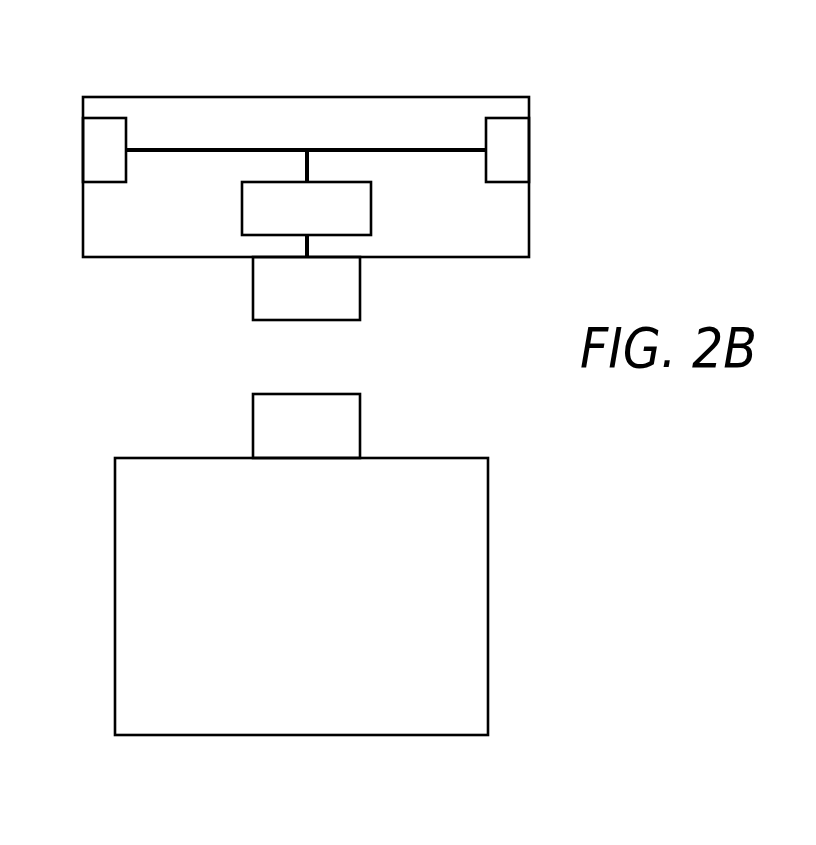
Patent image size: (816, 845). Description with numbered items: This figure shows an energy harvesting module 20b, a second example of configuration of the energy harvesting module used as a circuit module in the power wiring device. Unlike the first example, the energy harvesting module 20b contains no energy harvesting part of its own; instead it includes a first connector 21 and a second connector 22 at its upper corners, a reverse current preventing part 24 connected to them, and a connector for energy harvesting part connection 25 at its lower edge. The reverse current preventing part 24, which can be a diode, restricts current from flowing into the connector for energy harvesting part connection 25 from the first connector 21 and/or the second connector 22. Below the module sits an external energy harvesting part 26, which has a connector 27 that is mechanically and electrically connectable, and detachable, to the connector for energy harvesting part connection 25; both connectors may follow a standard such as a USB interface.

The energy harvesting module 20b is at (391, 94).
The first connector 21 is at (102, 118).
The second connector 22 is at (510, 118).
The reverse current preventing part 24 is at (372, 207).
The connector for energy harvesting part connection 25 is at (361, 287).
The external energy harvesting part 26 is at (462, 455).
The connector 27 is at (361, 410).